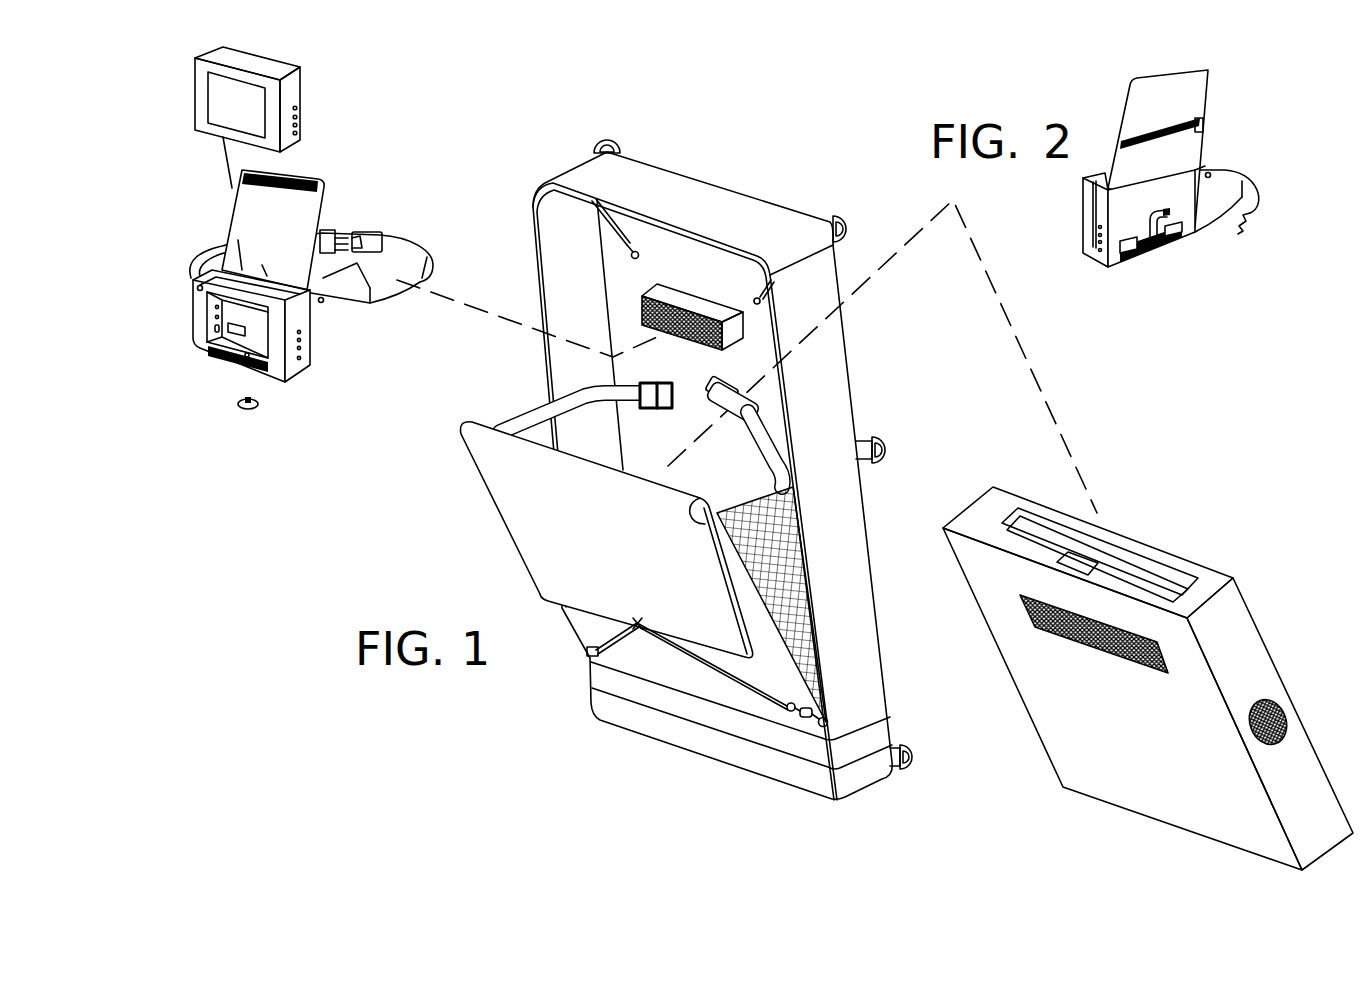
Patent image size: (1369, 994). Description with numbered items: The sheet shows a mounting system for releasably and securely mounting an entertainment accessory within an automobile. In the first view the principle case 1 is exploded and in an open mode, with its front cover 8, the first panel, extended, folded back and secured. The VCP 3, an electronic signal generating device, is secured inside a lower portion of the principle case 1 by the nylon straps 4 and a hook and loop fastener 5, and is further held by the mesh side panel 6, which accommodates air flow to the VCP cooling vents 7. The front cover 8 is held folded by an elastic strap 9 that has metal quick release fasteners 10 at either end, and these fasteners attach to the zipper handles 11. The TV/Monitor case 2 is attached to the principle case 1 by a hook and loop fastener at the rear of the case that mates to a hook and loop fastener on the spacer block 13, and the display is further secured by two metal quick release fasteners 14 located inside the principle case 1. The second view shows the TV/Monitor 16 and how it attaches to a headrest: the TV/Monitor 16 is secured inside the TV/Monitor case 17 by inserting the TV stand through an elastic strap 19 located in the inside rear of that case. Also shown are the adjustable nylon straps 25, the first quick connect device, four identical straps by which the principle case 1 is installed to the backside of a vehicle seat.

In FIG. 1, the principle case 1 is at (725, 188).
In FIG. 1, the TV/Monitor case 2 is at (290, 378).
In FIG. 1, the VCP 3 is at (1150, 792).
In FIG. 1, the nylon straps 4 is at (560, 380).
In FIG. 1, the hook and loop fastener 5 is at (1027, 617).
In FIG. 1, the mesh side panel 6 is at (808, 548).
In FIG. 1, the VCP cooling vents 7 is at (1280, 703).
In FIG. 1, the front cover 8 is at (517, 505).
In FIG. 1, the elastic strap 9 is at (747, 683).
In FIG. 1, the metal quick release fasteners 10 is at (793, 714).
In FIG. 1, the zipper handles 11 is at (823, 727).
In FIG. 1, the spacer block 13 is at (640, 298).
In FIG. 1, the metal quick release fasteners 14 is at (637, 252).
In FIG. 1, the TV/Monitor 16 is at (302, 102).
In FIG. 1, the TV/Monitor case 17 is at (260, 408).
In FIG. 1, the elastic strap 19 is at (283, 205).
In FIG. 1, the adjustable nylon straps 25 is at (422, 240).
In FIG. 2, the adjustable nylon straps 25 is at (1238, 233).